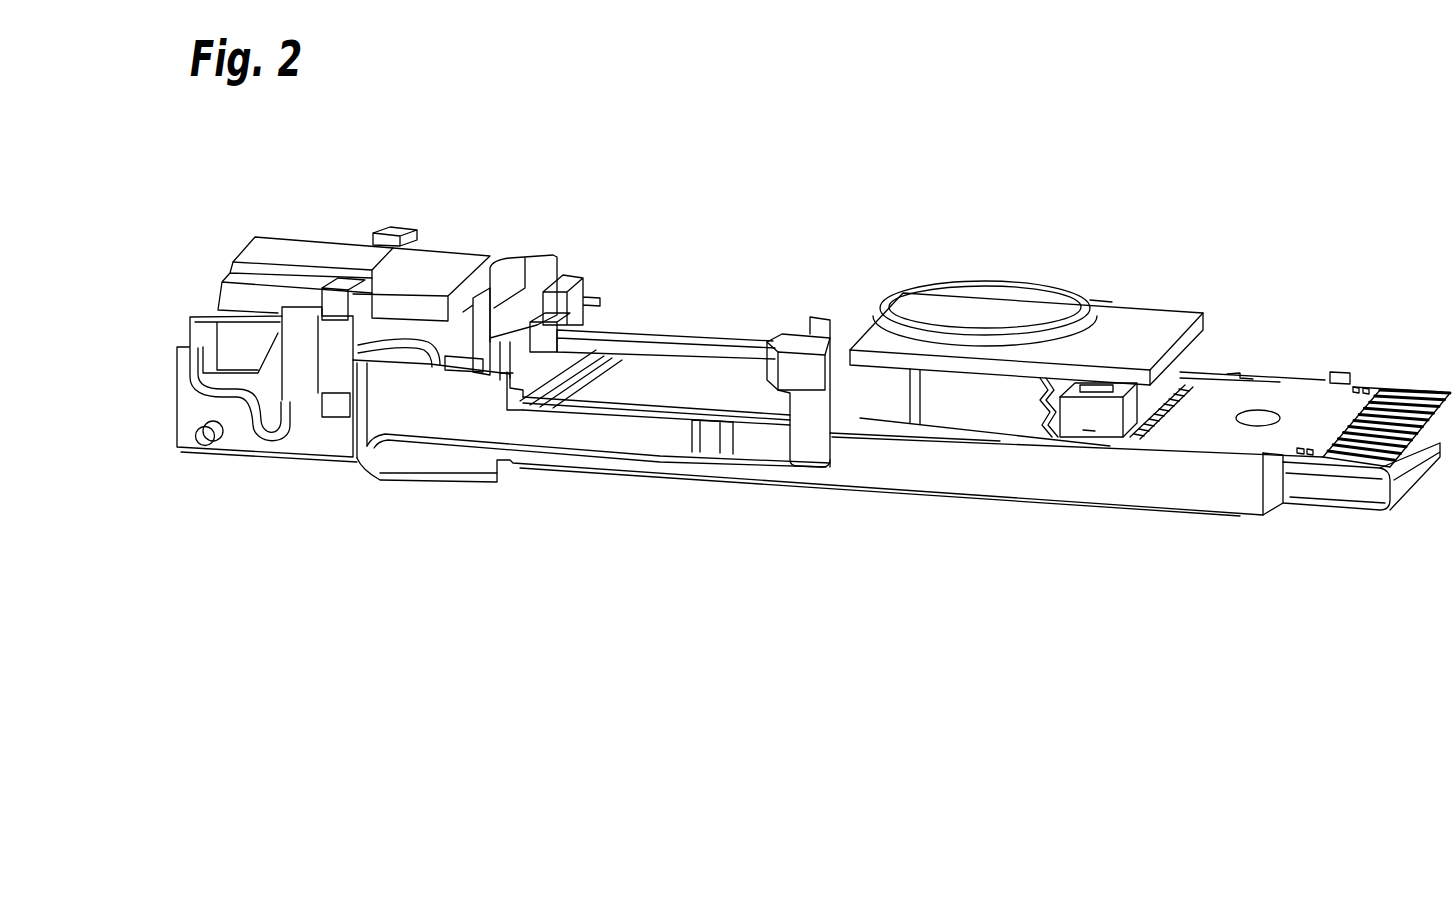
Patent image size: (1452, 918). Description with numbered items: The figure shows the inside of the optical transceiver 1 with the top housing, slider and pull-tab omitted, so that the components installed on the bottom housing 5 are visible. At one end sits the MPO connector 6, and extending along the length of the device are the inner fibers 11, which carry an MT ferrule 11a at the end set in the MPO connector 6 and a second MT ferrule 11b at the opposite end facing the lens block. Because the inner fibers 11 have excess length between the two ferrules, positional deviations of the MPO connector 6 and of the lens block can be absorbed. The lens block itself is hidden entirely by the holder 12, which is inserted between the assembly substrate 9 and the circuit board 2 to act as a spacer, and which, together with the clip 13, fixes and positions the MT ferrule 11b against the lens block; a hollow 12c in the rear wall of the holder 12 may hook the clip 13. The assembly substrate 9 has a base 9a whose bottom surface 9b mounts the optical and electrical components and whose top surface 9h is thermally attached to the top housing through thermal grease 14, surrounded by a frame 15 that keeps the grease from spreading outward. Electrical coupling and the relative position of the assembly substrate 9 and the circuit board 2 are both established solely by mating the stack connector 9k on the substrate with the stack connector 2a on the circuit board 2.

The optical transceiver 1 is at (693, 209).
The circuit board 2 is at (1245, 434).
The stack connector 2a is at (1087, 430).
The bottom housing 5 is at (703, 468).
The MPO connector 6 is at (251, 251).
The assembly substrate 9 is at (1063, 393).
The base 9a is at (1210, 330).
The bottom surface 9b is at (938, 380).
The top surface 9h is at (1153, 312).
The stack connector 9k is at (1100, 388).
The inner fibers 11 is at (646, 355).
The MT ferrule 11a is at (588, 300).
The MT ferrule 11b is at (792, 338).
The holder 12 is at (1031, 465).
The hollow 12c is at (1043, 418).
The clip 13 is at (811, 386).
The thermal grease 14 is at (1018, 295).
The frame 15 is at (1100, 302).